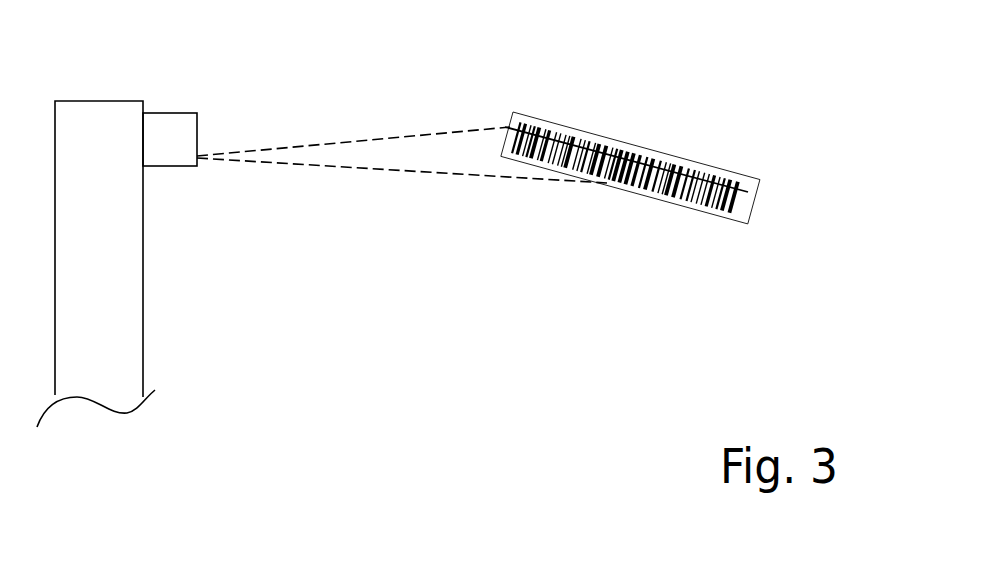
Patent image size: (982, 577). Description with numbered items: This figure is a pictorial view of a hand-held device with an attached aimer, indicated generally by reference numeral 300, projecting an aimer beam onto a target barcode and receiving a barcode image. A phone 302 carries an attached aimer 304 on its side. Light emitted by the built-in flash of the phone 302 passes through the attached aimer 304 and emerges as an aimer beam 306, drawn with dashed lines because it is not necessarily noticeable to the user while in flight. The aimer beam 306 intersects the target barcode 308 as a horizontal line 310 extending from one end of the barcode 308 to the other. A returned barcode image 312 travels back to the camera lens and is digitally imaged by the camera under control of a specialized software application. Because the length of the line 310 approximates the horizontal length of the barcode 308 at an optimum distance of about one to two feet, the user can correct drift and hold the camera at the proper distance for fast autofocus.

The hand-held device with attached aimer details 300 is at (366, 274).
The phone 302 is at (143, 370).
The attached aimer 304 is at (170, 166).
The aimer beam 306 is at (490, 175).
The target barcode 308 is at (655, 198).
The aimer beam projected on the target barcode 310 is at (623, 157).
The returned barcode image 312 is at (216, 122).